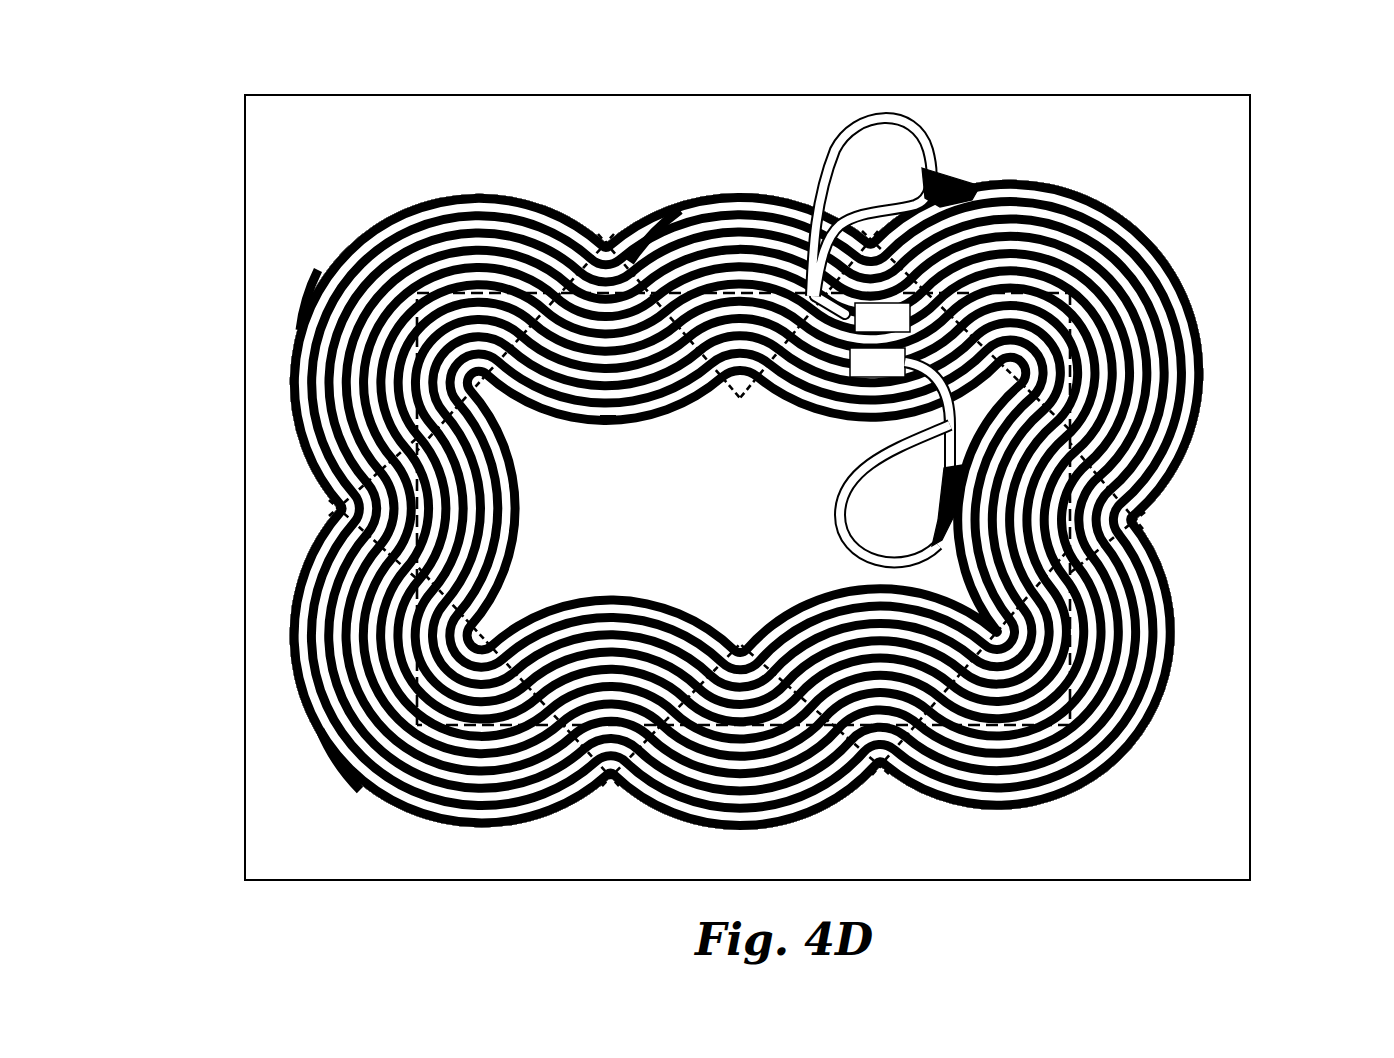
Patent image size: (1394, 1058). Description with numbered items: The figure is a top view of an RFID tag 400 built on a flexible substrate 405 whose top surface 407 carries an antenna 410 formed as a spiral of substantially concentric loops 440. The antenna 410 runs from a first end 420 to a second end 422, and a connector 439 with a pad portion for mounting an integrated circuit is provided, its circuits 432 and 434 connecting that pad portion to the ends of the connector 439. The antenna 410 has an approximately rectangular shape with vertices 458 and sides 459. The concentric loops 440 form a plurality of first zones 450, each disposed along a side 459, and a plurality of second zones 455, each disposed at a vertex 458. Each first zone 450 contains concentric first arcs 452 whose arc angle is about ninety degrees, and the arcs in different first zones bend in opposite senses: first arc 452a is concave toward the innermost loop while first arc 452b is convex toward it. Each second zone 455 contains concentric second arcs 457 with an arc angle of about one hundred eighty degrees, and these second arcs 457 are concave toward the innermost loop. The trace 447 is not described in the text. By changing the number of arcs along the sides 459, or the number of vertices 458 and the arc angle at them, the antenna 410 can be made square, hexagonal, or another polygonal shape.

The RFID tag 400 is at (1270, 131).
The flexible substrate 405 is at (1025, 110).
The top surface 407 is at (1135, 112).
The antenna 410 is at (1203, 300).
The first end 420 is at (968, 460).
The second end 422 is at (958, 186).
The circuit 432 is at (944, 433).
The circuit 434 is at (808, 292).
The connector 439 is at (862, 497).
The substantially concentric loops 440 is at (320, 322).
The outer trace 447 is at (335, 757).
The first zone 450 is at (662, 252).
The first arcs 452 is at (602, 243).
The first arc 452a is at (731, 352).
The first arc 452b is at (608, 362).
The second zone 455 is at (330, 545).
The second arcs 457 is at (500, 813).
The vertices 458 is at (417, 293).
The sides 459 is at (1075, 640).